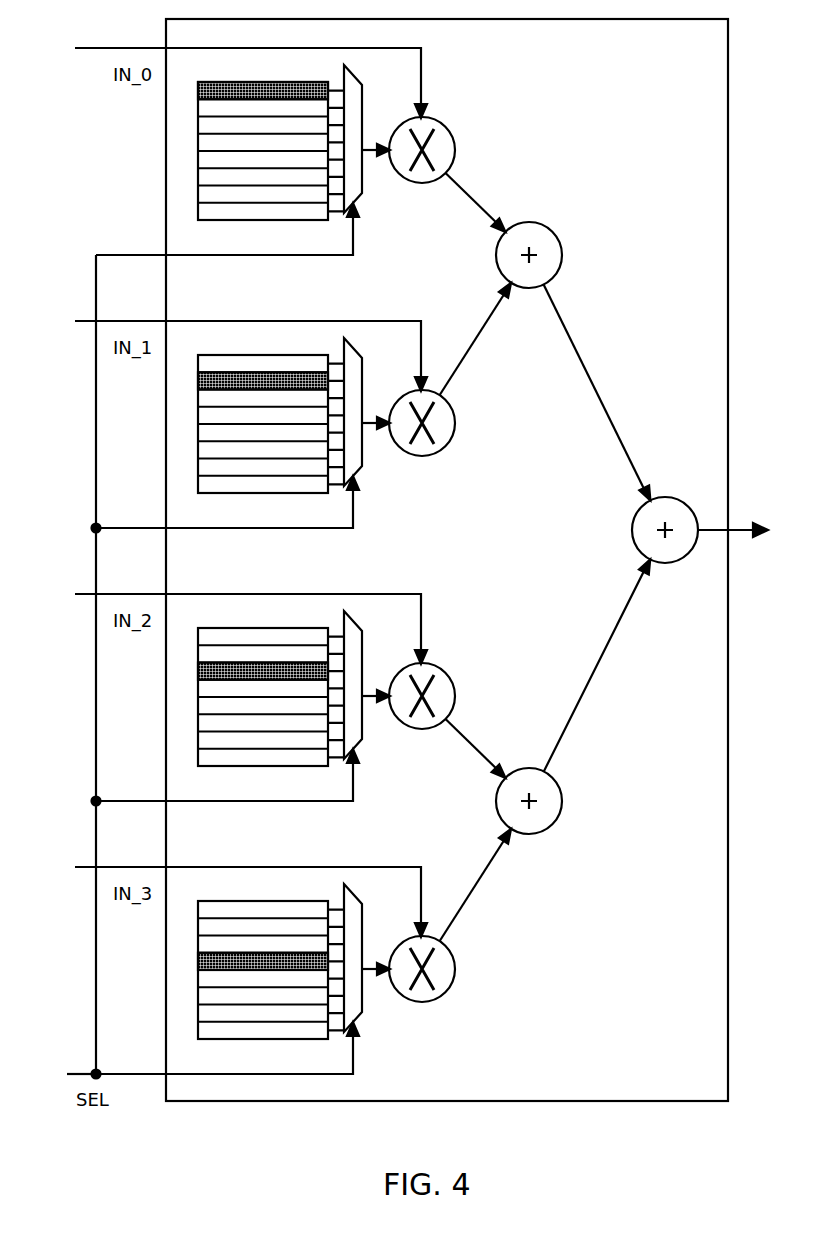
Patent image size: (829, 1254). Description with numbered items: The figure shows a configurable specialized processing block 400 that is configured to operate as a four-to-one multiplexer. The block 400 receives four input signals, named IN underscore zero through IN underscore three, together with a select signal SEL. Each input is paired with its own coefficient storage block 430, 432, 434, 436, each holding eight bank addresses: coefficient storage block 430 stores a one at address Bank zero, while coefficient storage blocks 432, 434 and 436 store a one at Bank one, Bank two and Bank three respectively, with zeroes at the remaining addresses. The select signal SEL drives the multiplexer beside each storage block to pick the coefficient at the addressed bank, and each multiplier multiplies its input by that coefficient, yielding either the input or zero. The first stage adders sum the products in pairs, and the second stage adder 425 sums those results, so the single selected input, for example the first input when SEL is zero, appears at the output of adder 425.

The configurable specialized processing block 400 is at (713, 57).
The second stage adder 425 is at (632, 530).
The coefficient storage block 430 is at (238, 82).
The coefficient storage block 432 is at (263, 409).
The coefficient storage block 434 is at (263, 682).
The coefficient storage block 436 is at (263, 955).